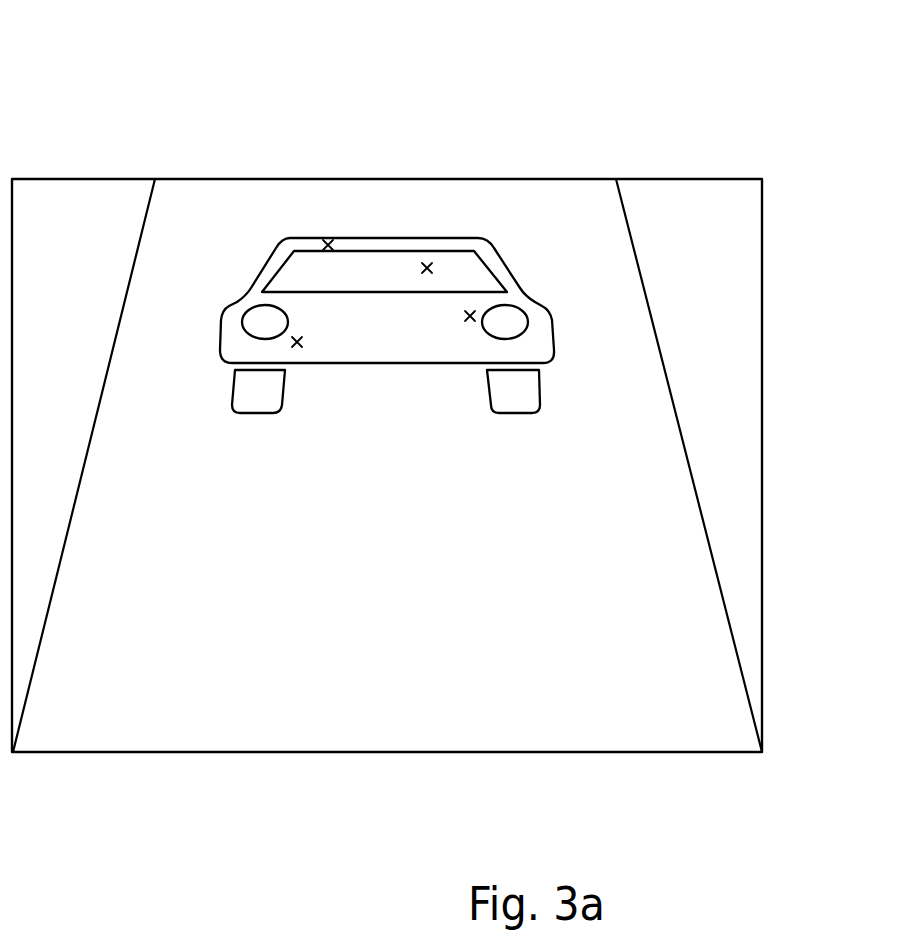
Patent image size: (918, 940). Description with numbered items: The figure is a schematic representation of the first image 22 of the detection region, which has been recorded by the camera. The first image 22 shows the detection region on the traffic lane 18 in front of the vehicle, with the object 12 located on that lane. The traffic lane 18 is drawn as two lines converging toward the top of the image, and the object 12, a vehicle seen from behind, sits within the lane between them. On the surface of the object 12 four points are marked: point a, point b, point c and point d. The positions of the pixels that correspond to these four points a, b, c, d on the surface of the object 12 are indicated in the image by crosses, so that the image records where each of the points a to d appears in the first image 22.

The first image 22 is at (138, 72).
The object 12 is at (525, 232).
The traffic lane 18 is at (705, 525).
The point a is at (329, 240).
The point b is at (428, 262).
The point c is at (470, 322).
The point d is at (303, 342).